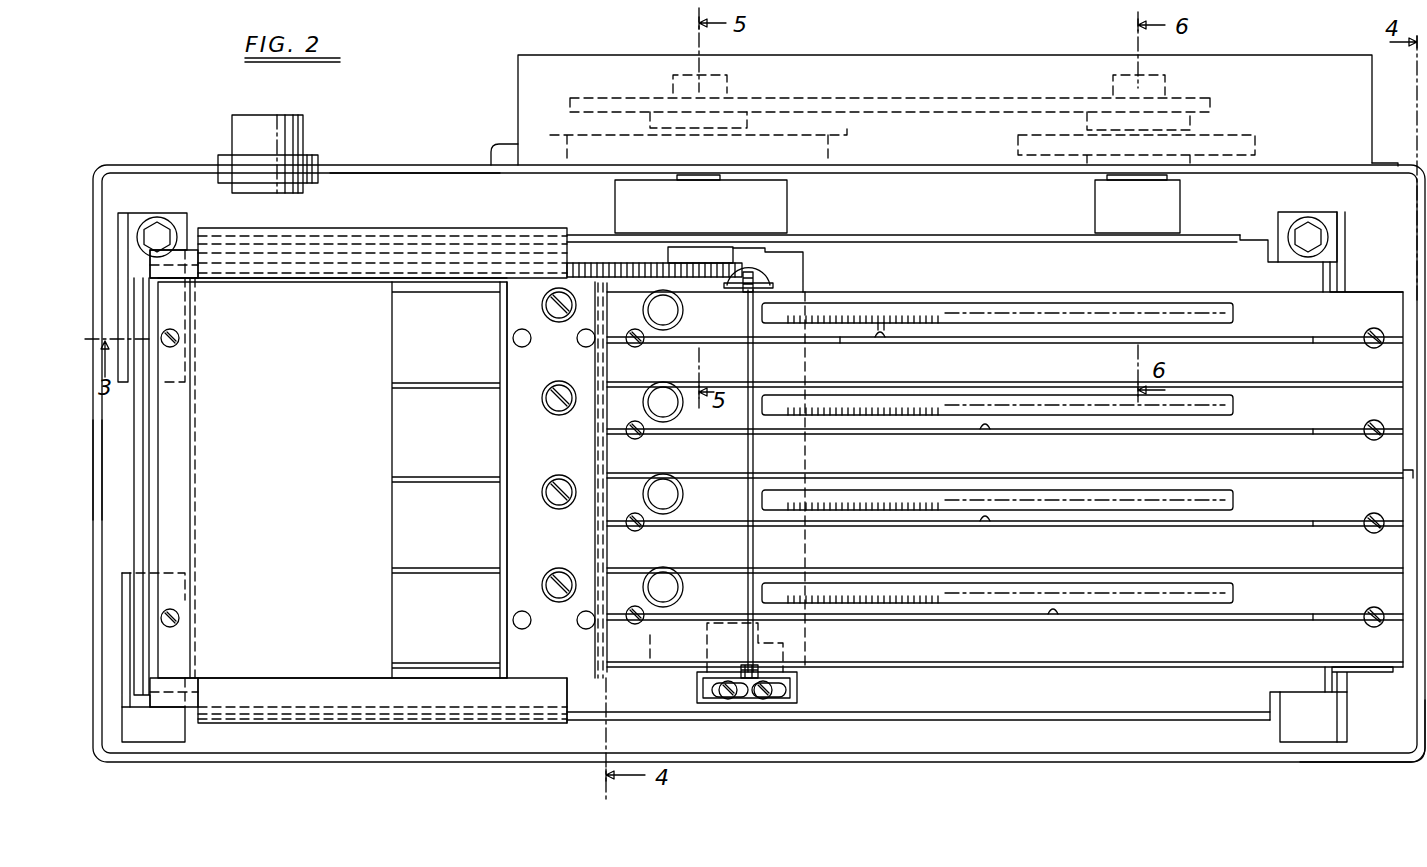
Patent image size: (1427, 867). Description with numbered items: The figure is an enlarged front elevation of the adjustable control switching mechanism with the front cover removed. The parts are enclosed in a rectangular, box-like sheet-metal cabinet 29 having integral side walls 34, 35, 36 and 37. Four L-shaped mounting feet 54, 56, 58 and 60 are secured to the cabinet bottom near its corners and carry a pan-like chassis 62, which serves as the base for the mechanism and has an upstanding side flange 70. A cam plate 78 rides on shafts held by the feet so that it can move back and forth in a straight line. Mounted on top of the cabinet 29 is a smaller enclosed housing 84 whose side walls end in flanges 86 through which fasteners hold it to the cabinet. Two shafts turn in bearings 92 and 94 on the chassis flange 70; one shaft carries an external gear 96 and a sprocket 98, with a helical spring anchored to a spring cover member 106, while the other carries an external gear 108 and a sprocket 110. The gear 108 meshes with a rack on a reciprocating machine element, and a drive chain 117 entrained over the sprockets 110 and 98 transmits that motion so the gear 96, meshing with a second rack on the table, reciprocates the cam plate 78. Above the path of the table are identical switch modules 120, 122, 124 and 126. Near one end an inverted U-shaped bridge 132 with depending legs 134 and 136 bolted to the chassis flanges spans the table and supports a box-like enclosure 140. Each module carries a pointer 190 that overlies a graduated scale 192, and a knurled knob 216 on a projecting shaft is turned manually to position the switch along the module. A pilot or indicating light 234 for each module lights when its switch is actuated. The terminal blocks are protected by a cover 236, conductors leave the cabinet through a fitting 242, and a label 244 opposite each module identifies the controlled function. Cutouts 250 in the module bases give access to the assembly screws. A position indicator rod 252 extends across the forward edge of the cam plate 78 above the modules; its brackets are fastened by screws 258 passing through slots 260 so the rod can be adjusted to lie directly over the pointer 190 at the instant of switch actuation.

The cabinet 29 is at (1326, 775).
The side wall 34 is at (98, 500).
The side wall 35 is at (1018, 762).
The side wall 36 is at (1424, 765).
The side wall 37 is at (428, 165).
The mounting foot 54 is at (172, 727).
The mounting foot 56 is at (1290, 725).
The mounting foot 58 is at (1328, 220).
The mounting foot 60 is at (136, 224).
The chassis 62 is at (889, 730).
The side flange 70 is at (996, 236).
The cam plate 78 is at (810, 278).
The housing 84 is at (1053, 55).
The flange 86 is at (500, 160).
The bearing 92 is at (787, 217).
The bearing 94 is at (1105, 207).
The external gear 96 is at (705, 250).
The sprocket 98 is at (634, 96).
The spring cover member 106 is at (832, 152).
The external gear 108 is at (1258, 146).
The sprocket 110 is at (1208, 100).
The drive chain 117 is at (951, 99).
The switch module 120 is at (1370, 291).
The switch module 122 is at (605, 221).
The switch module 124 is at (1005, 525).
The switch module 126 is at (1005, 640).
The bridge 132 is at (368, 696).
The leg 134 is at (497, 725).
The leg 136 is at (466, 231).
The enclosure 140 is at (276, 680).
The pointer 190 is at (882, 330).
The graduated scale 192 is at (1140, 302).
The knurled knob 216 is at (672, 318).
The indicating light 234 is at (560, 382).
The cover 236 is at (332, 478).
The fitting 242 is at (297, 139).
The label 244 is at (412, 405).
The cutout 250 is at (1368, 612).
The position indicator rod 252 is at (755, 366).
The screw 258 is at (723, 696).
The slot 260 is at (751, 697).